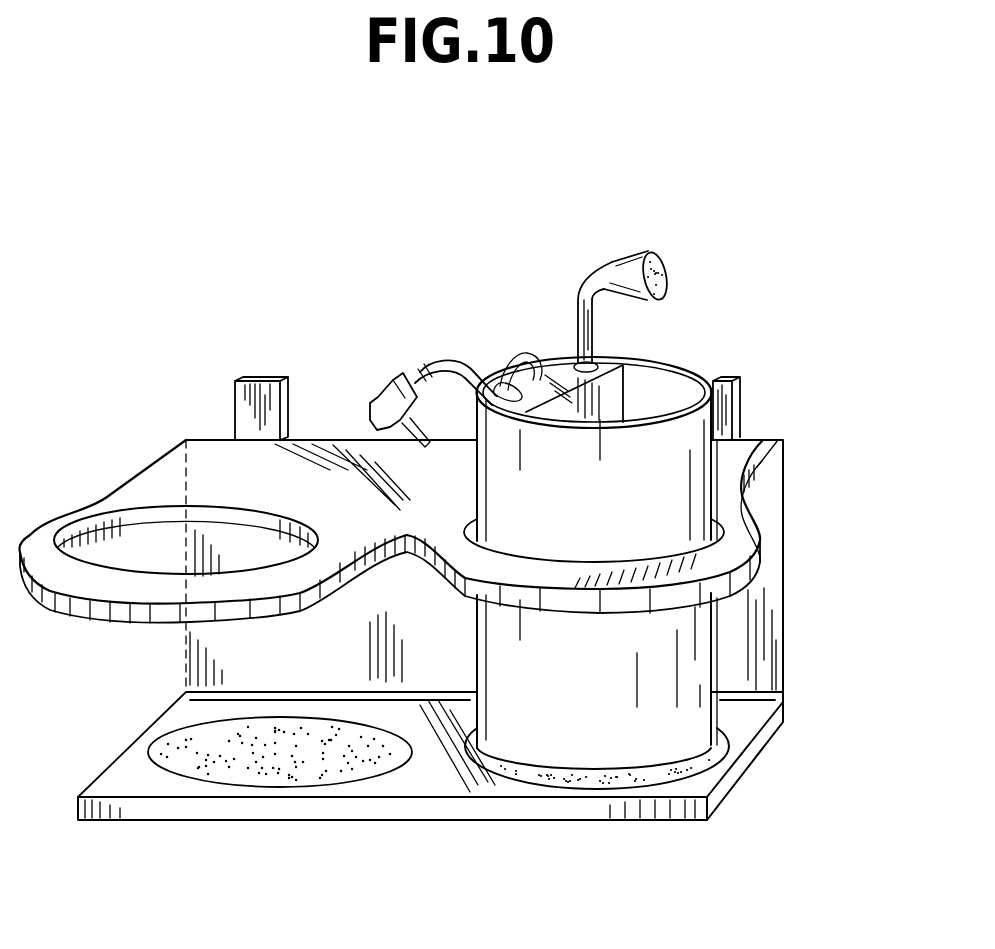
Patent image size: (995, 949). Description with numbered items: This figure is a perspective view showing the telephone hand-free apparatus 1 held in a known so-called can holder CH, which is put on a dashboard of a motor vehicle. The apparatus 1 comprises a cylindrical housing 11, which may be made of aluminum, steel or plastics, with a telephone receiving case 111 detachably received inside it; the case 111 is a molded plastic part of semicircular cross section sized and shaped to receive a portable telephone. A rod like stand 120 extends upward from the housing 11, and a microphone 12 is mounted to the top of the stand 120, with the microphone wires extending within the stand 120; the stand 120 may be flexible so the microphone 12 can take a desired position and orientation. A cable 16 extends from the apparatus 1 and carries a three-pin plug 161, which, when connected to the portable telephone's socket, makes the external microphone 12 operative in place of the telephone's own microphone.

The telephone hand-free apparatus 1 is at (773, 336).
The cylindrical housing 11 is at (697, 672).
The microphone 12 is at (636, 262).
The cable 16 is at (446, 362).
The telephone receiving case 111 is at (660, 385).
The rod like stand 120 is at (577, 298).
The 3P-plug 161 is at (386, 398).
The can holder CH is at (770, 586).